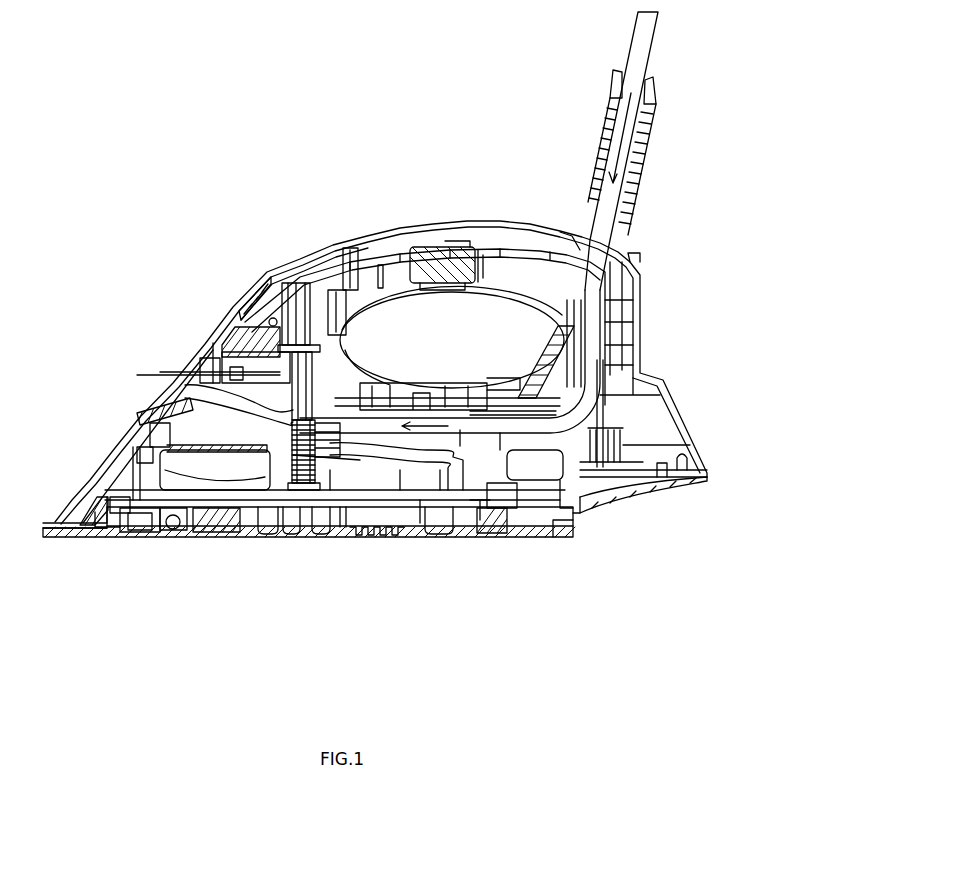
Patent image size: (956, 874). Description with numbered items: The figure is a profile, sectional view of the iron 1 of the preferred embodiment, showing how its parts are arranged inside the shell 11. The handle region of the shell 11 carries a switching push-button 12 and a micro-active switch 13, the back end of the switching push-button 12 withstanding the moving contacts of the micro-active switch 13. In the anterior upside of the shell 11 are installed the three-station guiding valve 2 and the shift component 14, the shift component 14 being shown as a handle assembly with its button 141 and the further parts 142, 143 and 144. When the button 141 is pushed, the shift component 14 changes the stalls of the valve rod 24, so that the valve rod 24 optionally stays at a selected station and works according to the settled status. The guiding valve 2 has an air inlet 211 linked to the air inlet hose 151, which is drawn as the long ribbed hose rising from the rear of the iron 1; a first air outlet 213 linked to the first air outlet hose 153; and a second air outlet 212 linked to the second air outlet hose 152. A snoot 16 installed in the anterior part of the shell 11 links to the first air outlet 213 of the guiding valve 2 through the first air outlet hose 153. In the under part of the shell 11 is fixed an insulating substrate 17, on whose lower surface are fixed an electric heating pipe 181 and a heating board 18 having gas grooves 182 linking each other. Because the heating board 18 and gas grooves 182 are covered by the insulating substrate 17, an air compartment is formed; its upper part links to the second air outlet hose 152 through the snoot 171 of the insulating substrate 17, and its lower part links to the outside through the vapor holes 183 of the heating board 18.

The iron 1 is at (689, 307).
The three-station guiding valve 2 is at (137, 372).
The shell 11 is at (331, 243).
The switching push-button 12 is at (377, 317).
The micro-active switch 13 is at (435, 267).
The shift component 14 is at (140, 191).
The button 141 is at (268, 270).
The fastening screw 142 is at (269, 320).
The handle insert block 143 is at (236, 334).
The handle lower housing 144 is at (215, 355).
The air inlet hose 151 is at (602, 237).
The second air outlet hose 152 is at (420, 523).
The first air outlet hose 153 is at (260, 408).
The snoot 16 is at (140, 413).
The insulating substrate 17 is at (105, 498).
The snoot of insulating substrate 171 is at (480, 520).
The heating board 18 is at (150, 535).
The electric heating pipe 181 is at (173, 530).
The gas groove 182 is at (110, 535).
The vapor hole 183 is at (130, 533).
The air inlet 211 is at (350, 307).
The second air outlet 212 is at (341, 526).
The first air outlet 213 is at (273, 460).
The valve rod 24 is at (303, 313).